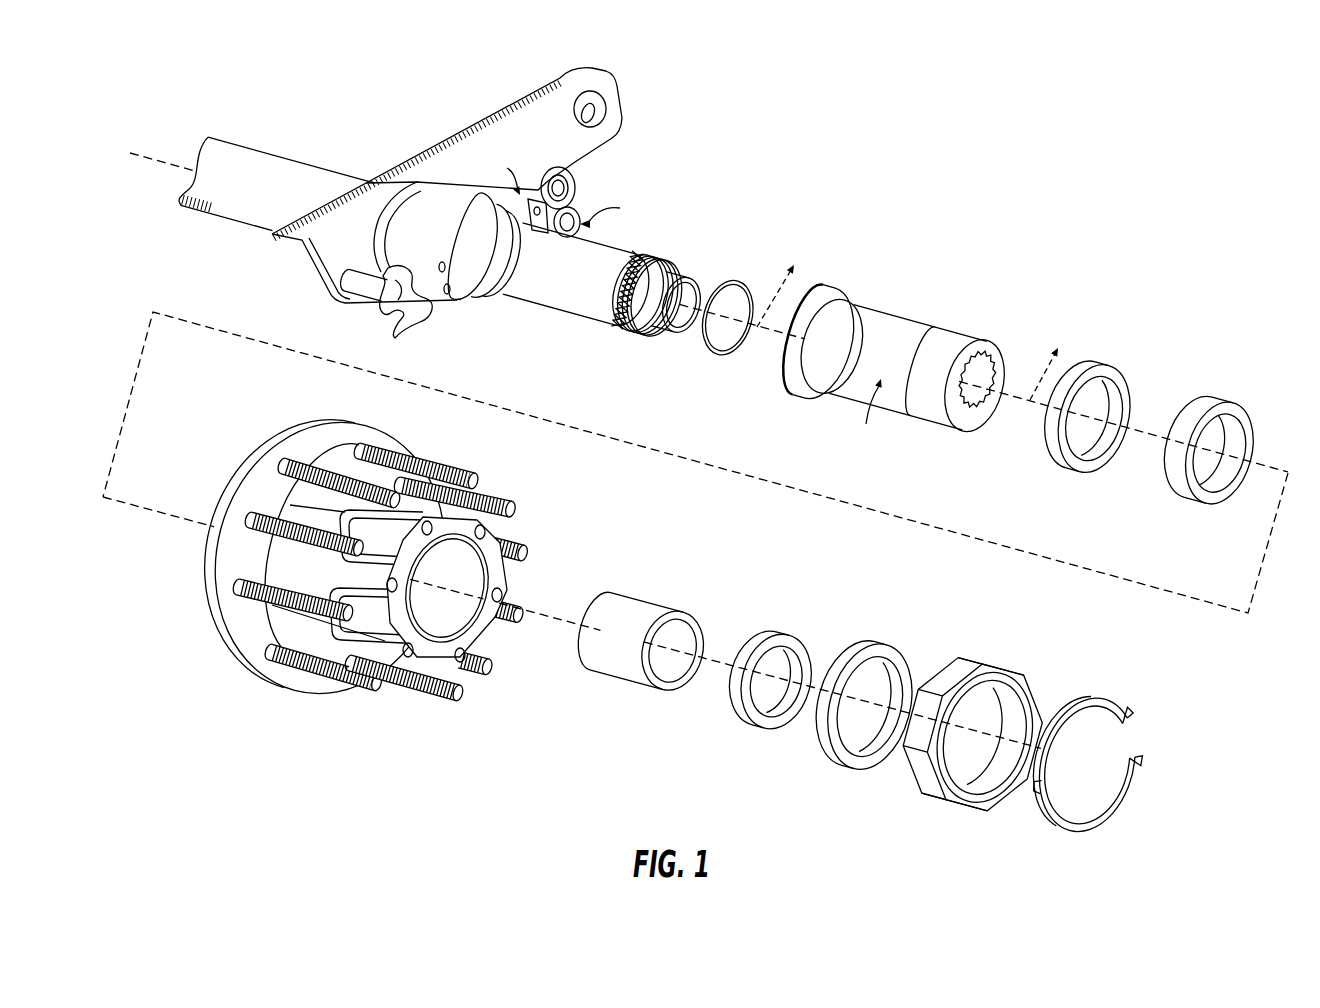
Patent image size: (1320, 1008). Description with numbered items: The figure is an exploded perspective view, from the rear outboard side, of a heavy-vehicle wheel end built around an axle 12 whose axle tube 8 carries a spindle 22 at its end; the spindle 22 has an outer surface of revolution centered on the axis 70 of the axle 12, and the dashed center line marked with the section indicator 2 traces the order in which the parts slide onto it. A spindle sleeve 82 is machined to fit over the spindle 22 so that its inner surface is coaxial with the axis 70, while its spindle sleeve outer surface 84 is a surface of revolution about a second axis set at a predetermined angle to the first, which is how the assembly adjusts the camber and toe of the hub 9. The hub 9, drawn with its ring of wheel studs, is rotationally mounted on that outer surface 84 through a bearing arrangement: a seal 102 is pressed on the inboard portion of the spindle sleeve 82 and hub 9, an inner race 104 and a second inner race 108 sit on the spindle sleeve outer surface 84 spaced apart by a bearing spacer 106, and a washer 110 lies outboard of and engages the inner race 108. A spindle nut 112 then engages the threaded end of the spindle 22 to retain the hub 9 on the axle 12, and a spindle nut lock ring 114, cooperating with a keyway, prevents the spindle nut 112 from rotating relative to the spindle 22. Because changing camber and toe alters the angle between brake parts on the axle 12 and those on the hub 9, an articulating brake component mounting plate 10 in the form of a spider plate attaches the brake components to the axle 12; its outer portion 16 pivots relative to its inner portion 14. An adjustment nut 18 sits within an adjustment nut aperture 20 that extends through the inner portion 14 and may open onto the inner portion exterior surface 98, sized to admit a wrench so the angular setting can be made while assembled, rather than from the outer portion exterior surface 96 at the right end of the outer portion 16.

The section line 2 is at (914, 317).
The axle tube 8 is at (274, 170).
The hub 9 is at (285, 677).
The articulating brake component mounting plate 10 is at (458, 300).
The axle 12 is at (255, 221).
The inner portion 14 is at (446, 248).
The outer portion 16 is at (563, 178).
The adjustment nut 18 is at (572, 210).
The adjustment nut aperture 20 is at (543, 192).
The spindle 22 is at (638, 262).
The axis 70 is at (150, 157).
The spindle sleeve 82 is at (889, 334).
The spindle sleeve outer surface 84 is at (866, 418).
The outer portion exterior surface 96 is at (616, 208).
The inner portion exterior surface 98 is at (497, 173).
The seal 102 is at (1083, 471).
The inner race 104 is at (1208, 404).
The bearing spacer 106 is at (636, 615).
The inner race 108 is at (757, 640).
The washer 110 is at (858, 770).
The spindle nut 112 is at (984, 668).
The spindle nut lock ring 114 is at (1104, 707).